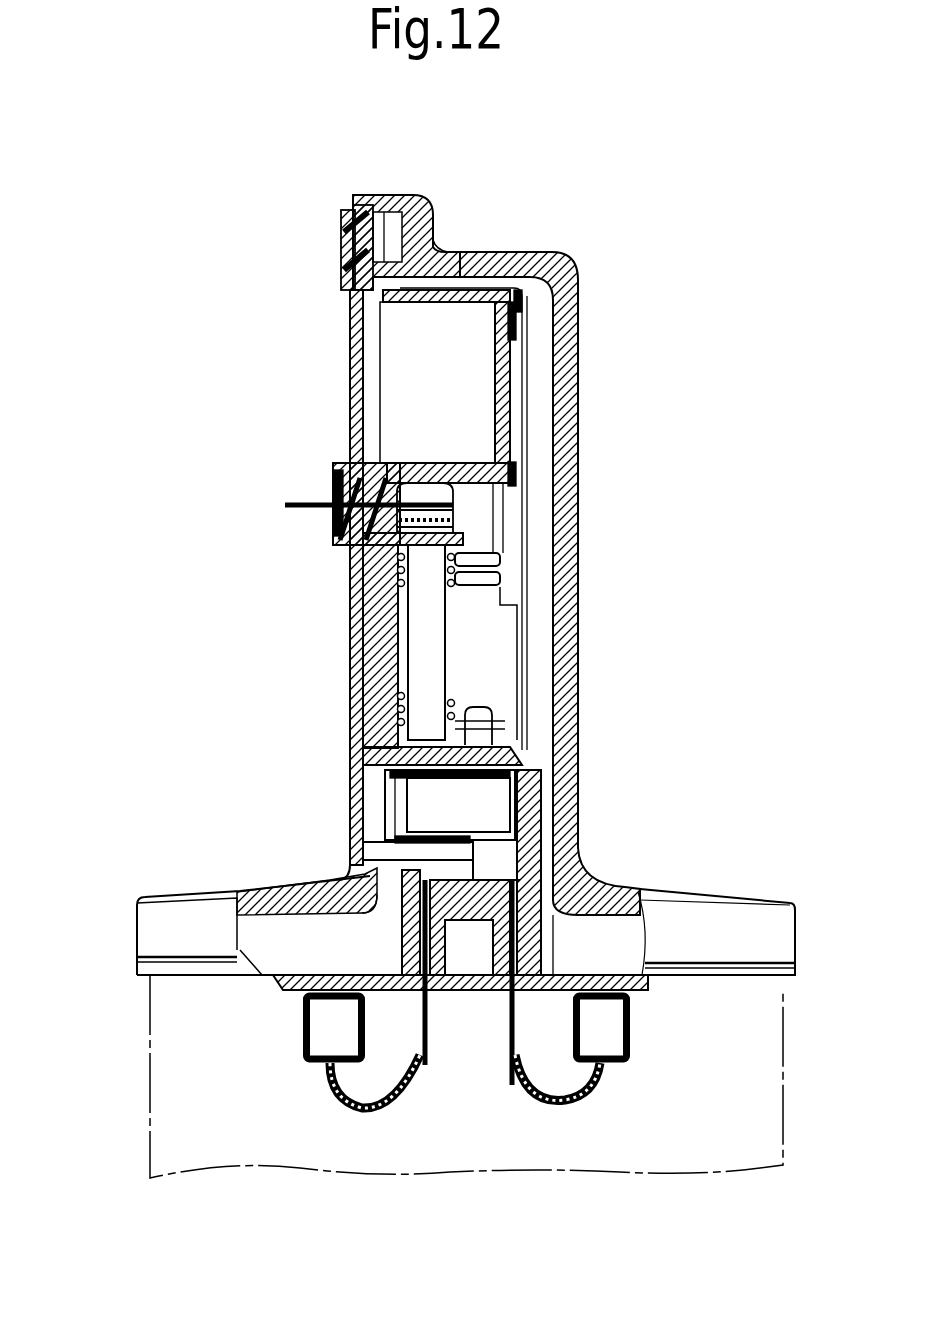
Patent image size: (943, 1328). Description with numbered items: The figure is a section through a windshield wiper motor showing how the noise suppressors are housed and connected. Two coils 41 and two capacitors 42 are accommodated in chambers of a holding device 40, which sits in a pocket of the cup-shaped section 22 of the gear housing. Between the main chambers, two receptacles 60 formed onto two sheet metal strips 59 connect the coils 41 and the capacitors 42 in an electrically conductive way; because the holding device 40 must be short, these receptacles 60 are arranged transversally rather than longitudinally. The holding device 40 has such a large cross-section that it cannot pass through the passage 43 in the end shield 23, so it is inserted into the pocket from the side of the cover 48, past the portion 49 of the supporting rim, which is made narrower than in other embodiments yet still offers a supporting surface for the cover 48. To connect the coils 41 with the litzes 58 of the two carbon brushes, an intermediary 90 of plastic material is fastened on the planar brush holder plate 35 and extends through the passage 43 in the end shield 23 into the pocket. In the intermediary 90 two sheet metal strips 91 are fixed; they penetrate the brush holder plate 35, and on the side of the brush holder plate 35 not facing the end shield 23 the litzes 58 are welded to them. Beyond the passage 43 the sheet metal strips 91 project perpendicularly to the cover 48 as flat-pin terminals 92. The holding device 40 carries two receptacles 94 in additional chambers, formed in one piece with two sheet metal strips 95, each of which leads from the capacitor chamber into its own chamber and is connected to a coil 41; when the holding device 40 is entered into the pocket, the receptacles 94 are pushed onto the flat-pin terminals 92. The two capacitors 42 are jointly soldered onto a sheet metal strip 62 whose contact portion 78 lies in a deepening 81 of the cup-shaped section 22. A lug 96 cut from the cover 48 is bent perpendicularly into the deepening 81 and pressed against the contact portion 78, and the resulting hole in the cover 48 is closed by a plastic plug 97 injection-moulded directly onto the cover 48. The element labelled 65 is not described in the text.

The plastic plug 97 is at (342, 215).
The lug 96 is at (384, 212).
The deepening 81 is at (405, 198).
The contact portion 78 is at (438, 245).
The cup-shaped section 22 is at (503, 252).
The sheet metal strip 62 is at (558, 252).
The cover 48 is at (352, 340).
The capacitor 42 is at (405, 388).
The receptacle 60 is at (418, 472).
The spring seat 65 is at (440, 483).
The sheet metal strip 59 is at (500, 560).
The coil 41 is at (402, 578).
The holding device 40 is at (382, 655).
The sheet metal strip 95 is at (492, 732).
The receptacle 94 is at (392, 795).
The flat-pin terminal 92 is at (425, 825).
The portion of the supporting rim 49 is at (345, 863).
The intermediary 90 is at (647, 838).
The end shield 23 is at (145, 935).
The passage 43 is at (385, 900).
The brush holder plate 35 is at (618, 993).
The sheet metal strip 91 is at (430, 1042).
The litz 58 is at (362, 1112).